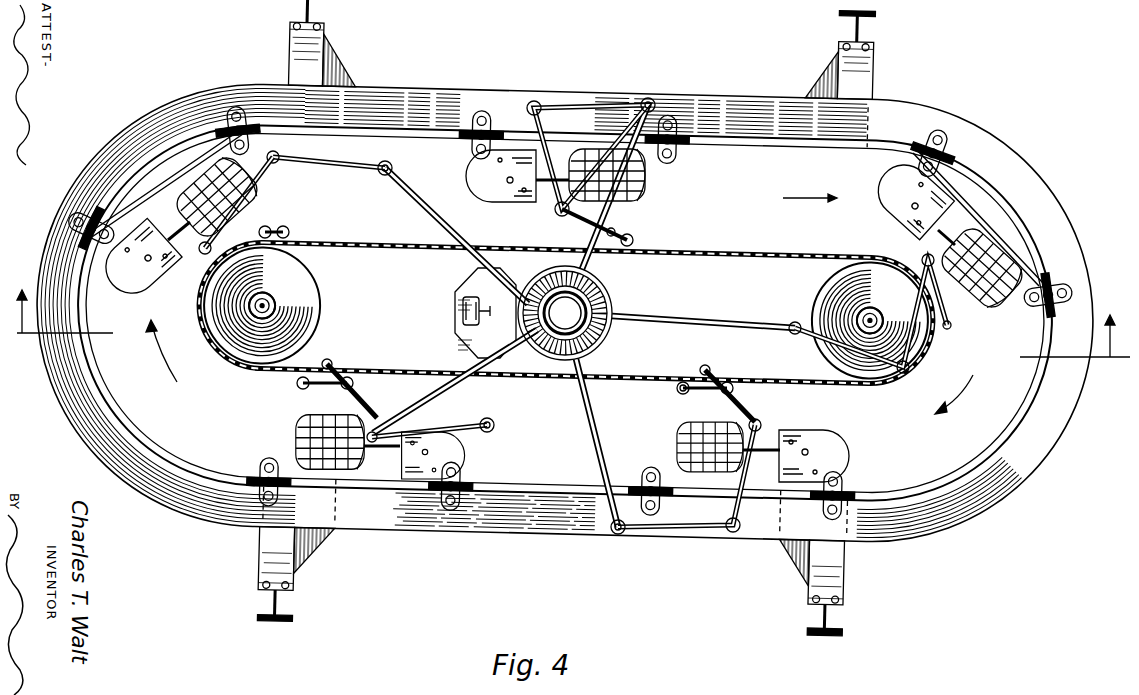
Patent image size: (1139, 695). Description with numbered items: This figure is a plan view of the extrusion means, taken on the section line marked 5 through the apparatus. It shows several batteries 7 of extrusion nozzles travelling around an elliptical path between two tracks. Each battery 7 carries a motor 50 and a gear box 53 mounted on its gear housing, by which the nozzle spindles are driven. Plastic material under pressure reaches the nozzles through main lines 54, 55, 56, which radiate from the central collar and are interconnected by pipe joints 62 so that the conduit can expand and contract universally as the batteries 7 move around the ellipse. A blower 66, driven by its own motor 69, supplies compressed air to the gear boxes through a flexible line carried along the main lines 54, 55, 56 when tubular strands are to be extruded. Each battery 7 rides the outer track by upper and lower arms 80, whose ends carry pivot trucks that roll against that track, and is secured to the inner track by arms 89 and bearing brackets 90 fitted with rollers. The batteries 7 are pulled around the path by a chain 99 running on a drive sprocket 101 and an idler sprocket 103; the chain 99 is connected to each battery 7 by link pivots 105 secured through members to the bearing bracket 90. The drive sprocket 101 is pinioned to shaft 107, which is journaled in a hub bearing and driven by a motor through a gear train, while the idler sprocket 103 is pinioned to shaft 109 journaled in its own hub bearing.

The section line 5- 5 is at (568, 320).
The battery of nozzles 7 is at (895, 180).
The motor 50 is at (680, 432).
The gear box 53 is at (830, 430).
The main line 54 is at (424, 205).
The main line 55 is at (327, 170).
The main line 56 is at (262, 178).
The joint 62 is at (652, 100).
The blower 66 is at (468, 280).
The motor 69 is at (462, 318).
The upper and lower arms 80 is at (973, 207).
The arm 89 is at (333, 405).
The bearing bracket 90 is at (630, 236).
The chain 99 is at (735, 252).
The drive sprocket 101 is at (300, 272).
The idler sprocket 103 is at (840, 265).
The link pivot 105 is at (270, 228).
The shaft 107 is at (274, 305).
The shaft 109 is at (858, 316).